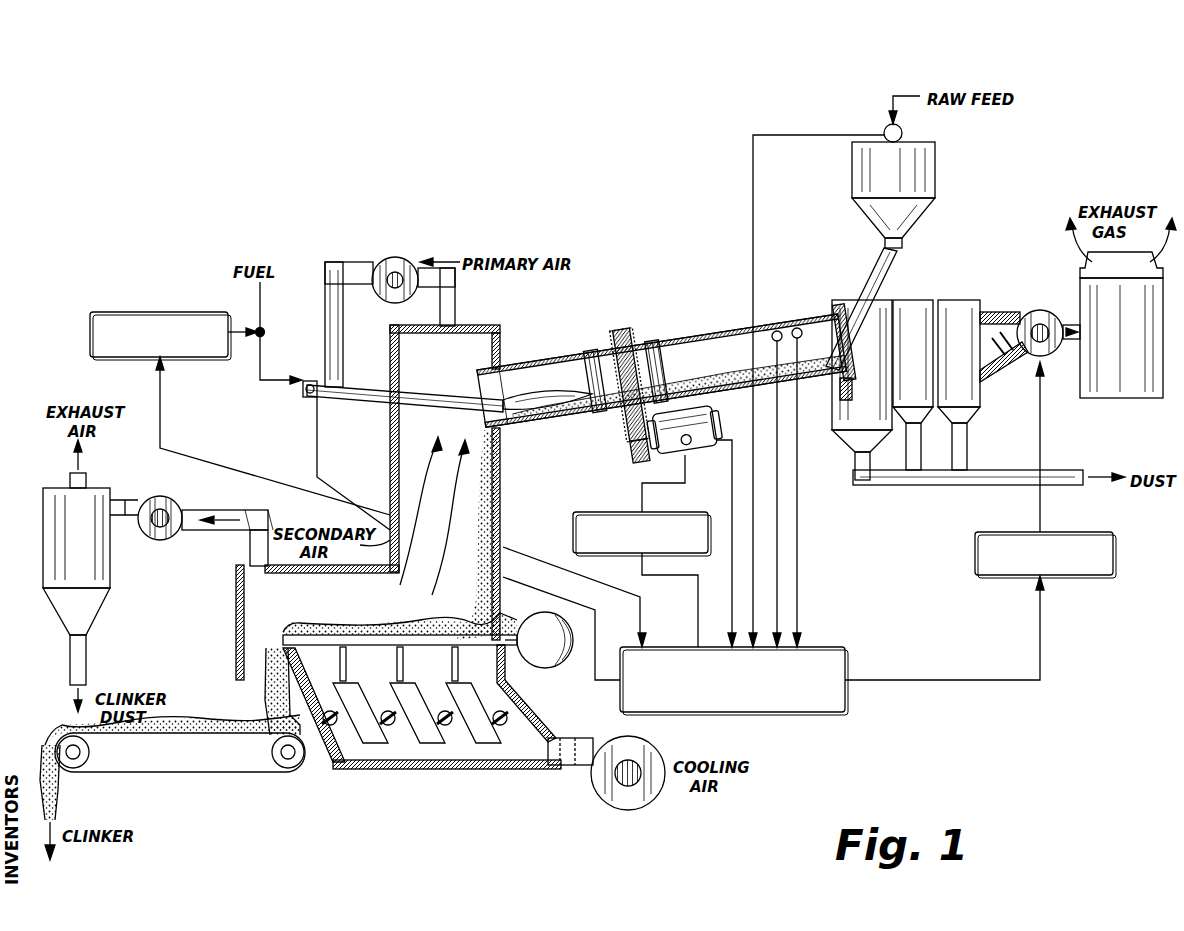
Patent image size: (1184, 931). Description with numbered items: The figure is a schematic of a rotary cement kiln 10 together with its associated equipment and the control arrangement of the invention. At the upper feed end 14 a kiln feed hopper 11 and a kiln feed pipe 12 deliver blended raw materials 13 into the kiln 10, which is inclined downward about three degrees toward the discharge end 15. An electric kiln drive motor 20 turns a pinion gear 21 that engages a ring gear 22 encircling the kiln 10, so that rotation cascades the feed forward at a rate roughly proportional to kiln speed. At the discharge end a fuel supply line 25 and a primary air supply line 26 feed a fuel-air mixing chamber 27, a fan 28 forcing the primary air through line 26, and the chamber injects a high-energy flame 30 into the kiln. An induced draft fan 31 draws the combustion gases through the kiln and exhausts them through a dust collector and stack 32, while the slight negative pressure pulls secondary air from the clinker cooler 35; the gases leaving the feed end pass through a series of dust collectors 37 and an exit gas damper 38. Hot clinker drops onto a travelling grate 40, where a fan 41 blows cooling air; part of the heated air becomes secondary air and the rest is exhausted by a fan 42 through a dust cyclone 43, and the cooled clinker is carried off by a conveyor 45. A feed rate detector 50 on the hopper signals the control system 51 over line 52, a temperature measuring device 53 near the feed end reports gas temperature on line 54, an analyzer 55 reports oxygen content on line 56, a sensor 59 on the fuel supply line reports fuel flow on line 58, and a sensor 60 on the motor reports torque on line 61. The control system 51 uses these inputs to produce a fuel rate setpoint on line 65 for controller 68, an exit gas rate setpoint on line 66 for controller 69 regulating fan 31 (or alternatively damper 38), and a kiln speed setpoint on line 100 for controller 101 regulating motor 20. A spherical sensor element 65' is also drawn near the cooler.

The rotary cement kiln 10 is at (692, 337).
The kiln feed hopper 11 is at (852, 176).
The kiln feed pipe 12 is at (886, 266).
The blended raw materials 13 is at (840, 385).
The feed end 14 is at (834, 316).
The discharge end 15 is at (530, 358).
The kiln drive motor 20 is at (712, 420).
The pinion gear 21 is at (628, 436).
The ring gear 22 is at (620, 330).
The fuel supply line 25 is at (310, 380).
The primary air supply line 26 is at (320, 265).
The fuel-air mixing chamber 27 is at (366, 384).
The fan 28 is at (398, 262).
The flame 30 is at (548, 388).
The induced draft fan 31 is at (1044, 312).
The stack 32 is at (1134, 398).
The clinker cooler 35 is at (434, 670).
The dust collectors 37 is at (920, 361).
The exit gas damper 38 is at (1014, 362).
The travelling grate 40 is at (328, 645).
The fan 41 is at (588, 778).
The fan 42 is at (164, 540).
The dust cyclone 43 is at (43, 543).
The conveyor 45 is at (145, 742).
The feed rate detector 50 is at (903, 132).
The control system 51 is at (822, 648).
The line 52 is at (753, 210).
The temperature measuring device 53 is at (776, 330).
The line 54 is at (777, 558).
The analyzer 55 is at (798, 327).
The line 56 is at (797, 584).
The line 58 is at (318, 416).
The sensor 59 is at (302, 392).
The sensor 60 is at (686, 448).
The line 61 is at (732, 618).
The line 65 is at (273, 436).
The cooler temperature sensor 65' is at (539, 627).
The line 66 is at (1042, 608).
The controller 68 is at (190, 312).
The controller 69 is at (1082, 534).
The line 100 is at (698, 612).
The controller 101 is at (663, 512).